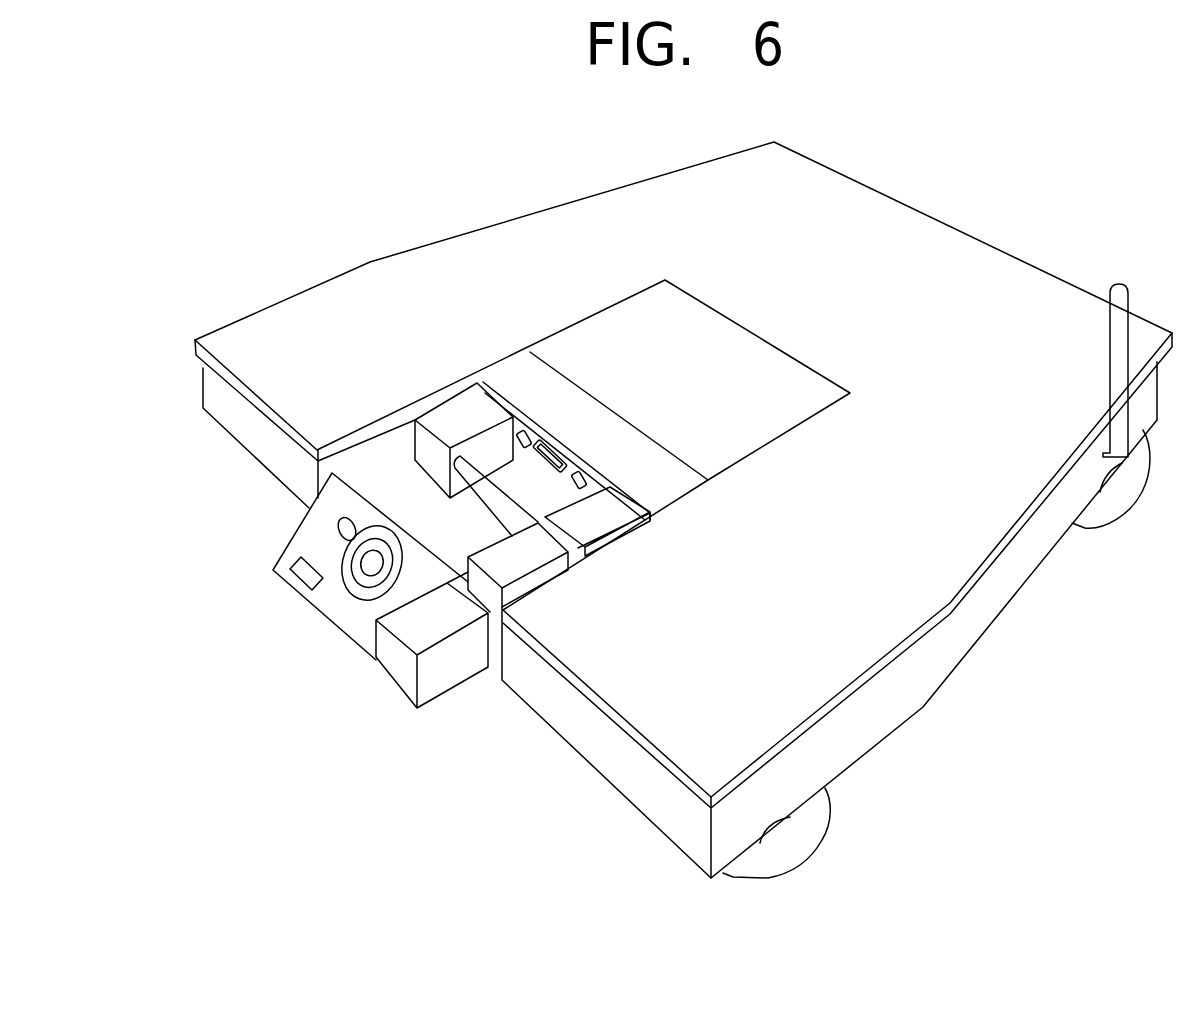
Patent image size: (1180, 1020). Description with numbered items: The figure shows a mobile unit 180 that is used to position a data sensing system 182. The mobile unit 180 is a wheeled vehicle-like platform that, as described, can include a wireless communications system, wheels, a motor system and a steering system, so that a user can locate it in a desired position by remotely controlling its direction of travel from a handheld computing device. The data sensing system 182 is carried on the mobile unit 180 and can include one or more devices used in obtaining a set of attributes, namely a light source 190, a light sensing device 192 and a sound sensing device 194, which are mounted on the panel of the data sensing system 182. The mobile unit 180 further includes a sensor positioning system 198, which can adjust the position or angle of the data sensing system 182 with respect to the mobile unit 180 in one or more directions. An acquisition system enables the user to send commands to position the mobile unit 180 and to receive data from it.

The mobile unit 180 is at (233, 203).
The data sensing system 182 is at (332, 613).
The light source 190 is at (337, 534).
The light sensing device 192 is at (368, 577).
The sound sensing device 194 is at (298, 578).
The sensor positioning system 198 is at (440, 674).